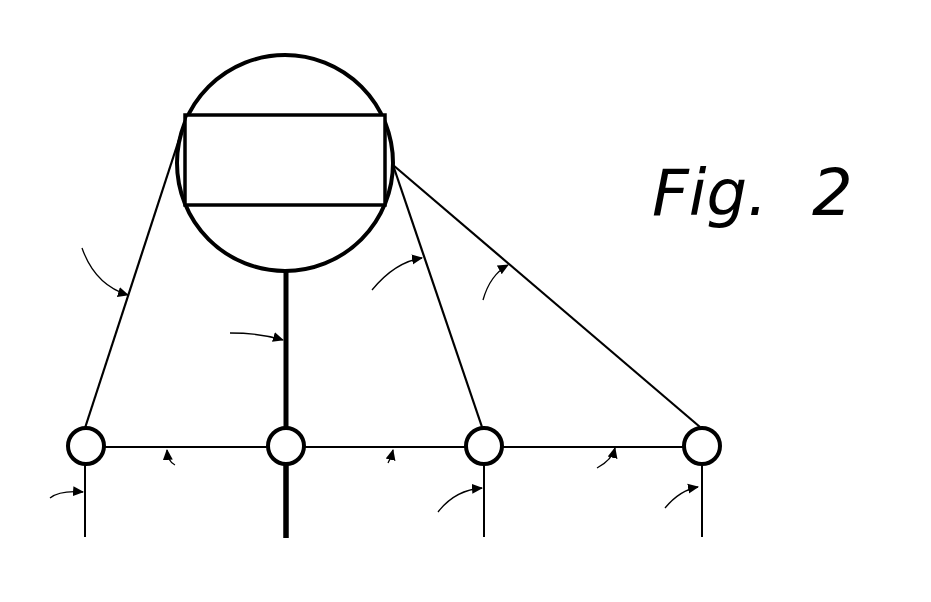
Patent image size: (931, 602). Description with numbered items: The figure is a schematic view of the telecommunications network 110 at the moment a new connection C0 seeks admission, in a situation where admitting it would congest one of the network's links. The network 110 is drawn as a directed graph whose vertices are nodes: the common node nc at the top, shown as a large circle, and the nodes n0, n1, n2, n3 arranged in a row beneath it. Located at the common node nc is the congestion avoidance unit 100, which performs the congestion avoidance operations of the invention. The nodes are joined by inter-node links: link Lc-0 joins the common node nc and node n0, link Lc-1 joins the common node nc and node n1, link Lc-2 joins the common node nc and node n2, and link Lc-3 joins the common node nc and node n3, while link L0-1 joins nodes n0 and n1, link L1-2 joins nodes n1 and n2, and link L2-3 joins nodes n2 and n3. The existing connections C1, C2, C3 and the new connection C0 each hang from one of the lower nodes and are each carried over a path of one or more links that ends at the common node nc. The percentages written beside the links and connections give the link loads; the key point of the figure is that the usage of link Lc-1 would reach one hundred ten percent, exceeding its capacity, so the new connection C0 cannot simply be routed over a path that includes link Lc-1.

The congestion avoidance unit 100 is at (285, 115).
The telecommunications network 110 is at (522, 152).
The common node nc is at (283, 55).
The node n0 is at (67, 447).
The node n1 is at (306, 443).
The node n2 is at (494, 430).
The node n3 is at (703, 425).
The new connection C0 is at (277, 525).
The connection C1 is at (64, 525).
The connection C2 is at (467, 525).
The connection C3 is at (683, 523).
The link Lc-0 is at (102, 378).
The link Lc-1 is at (283, 363).
The link Lc-2 is at (447, 317).
The link Lc-3 is at (627, 363).
The link L0-1 is at (148, 452).
The link L1-2 is at (352, 452).
The link L2-3 is at (545, 452).